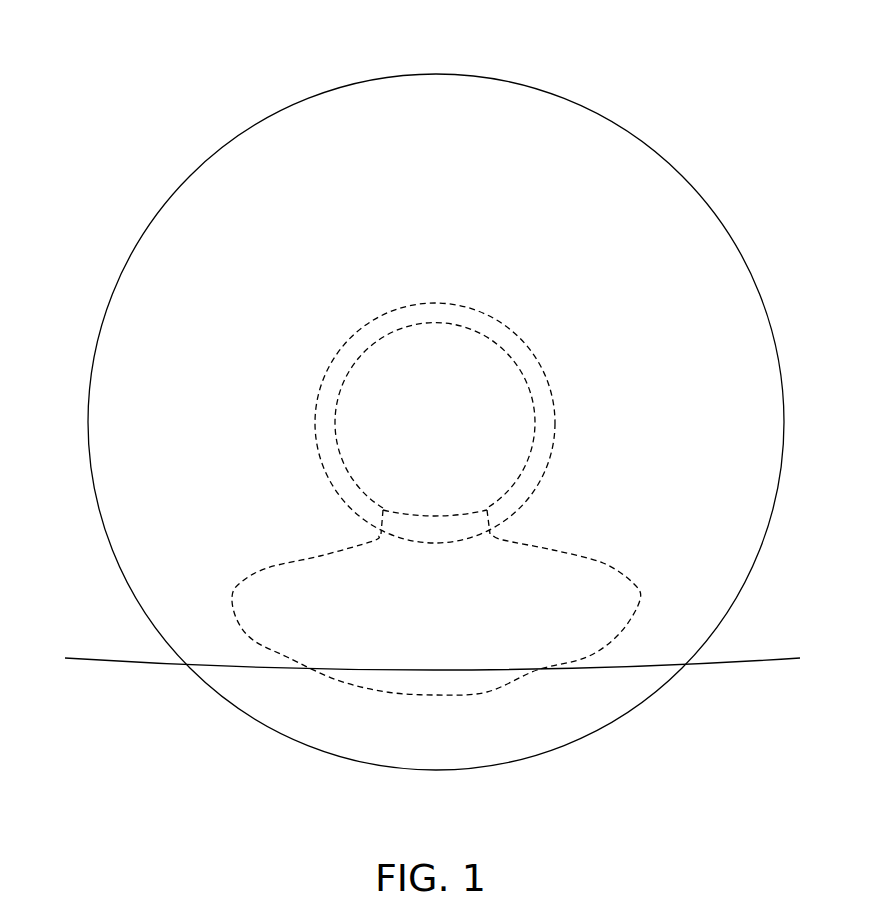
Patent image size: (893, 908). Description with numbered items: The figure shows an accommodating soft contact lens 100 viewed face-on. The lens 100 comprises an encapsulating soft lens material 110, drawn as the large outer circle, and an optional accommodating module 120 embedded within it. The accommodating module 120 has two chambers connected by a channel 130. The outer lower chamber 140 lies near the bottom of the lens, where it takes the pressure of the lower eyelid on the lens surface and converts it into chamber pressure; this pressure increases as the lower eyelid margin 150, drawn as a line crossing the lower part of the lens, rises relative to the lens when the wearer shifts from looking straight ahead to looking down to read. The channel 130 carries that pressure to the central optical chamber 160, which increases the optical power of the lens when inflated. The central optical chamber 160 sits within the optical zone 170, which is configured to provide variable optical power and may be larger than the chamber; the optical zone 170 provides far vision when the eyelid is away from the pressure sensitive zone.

The soft contact lens 100 is at (647, 50).
The encapsulating soft lens material 110 is at (692, 212).
The accommodating module 120 is at (367, 433).
The channel 130 is at (483, 513).
The outer lower chamber 140 is at (273, 603).
The lower eyelid margin 150 is at (628, 672).
The central optical chamber 160 is at (528, 385).
The optical zone 170 is at (557, 442).